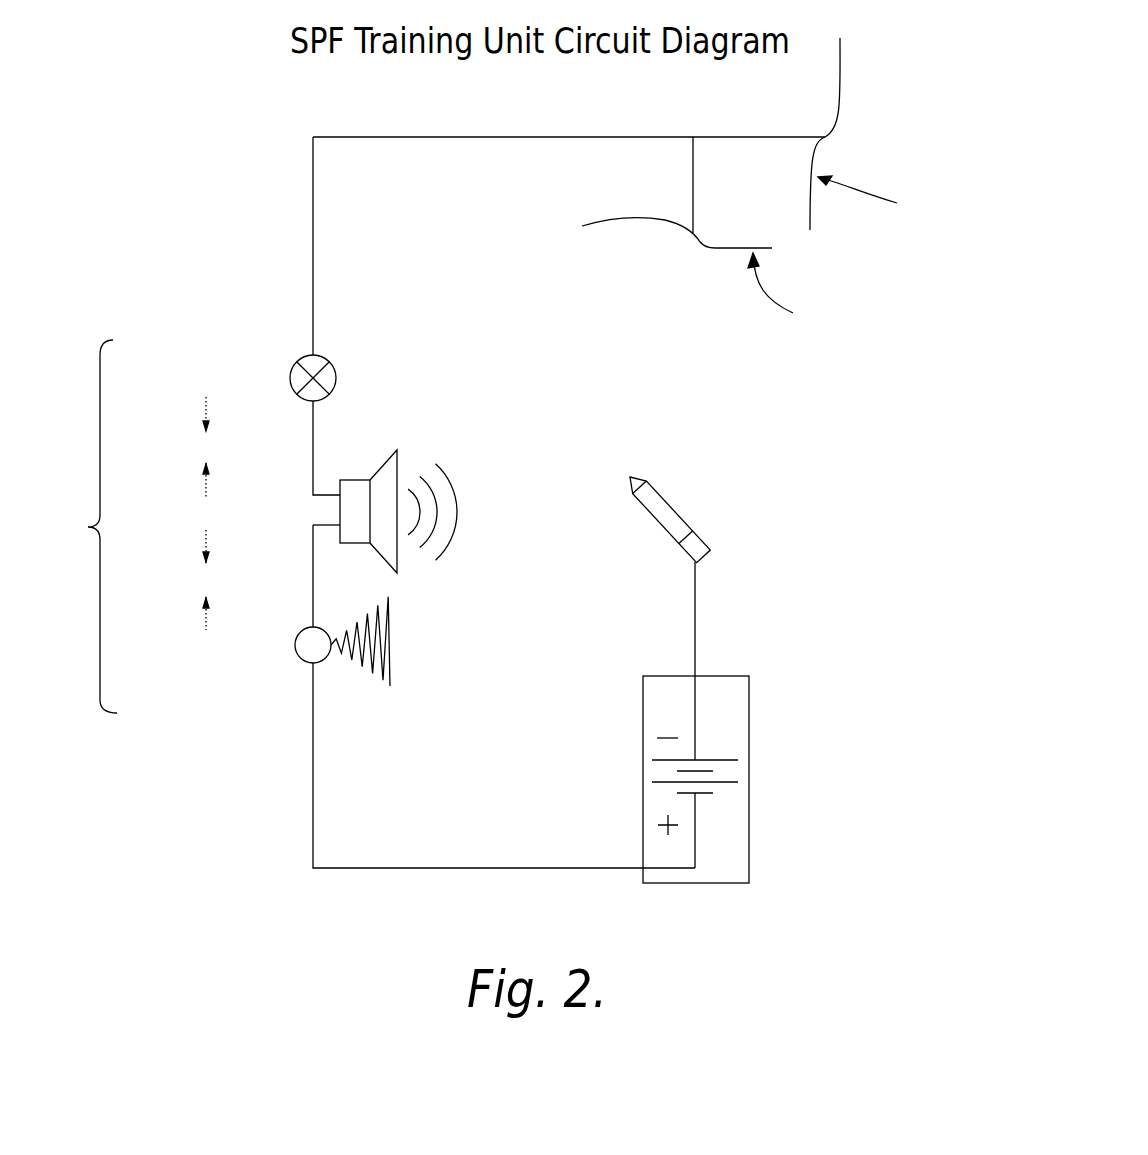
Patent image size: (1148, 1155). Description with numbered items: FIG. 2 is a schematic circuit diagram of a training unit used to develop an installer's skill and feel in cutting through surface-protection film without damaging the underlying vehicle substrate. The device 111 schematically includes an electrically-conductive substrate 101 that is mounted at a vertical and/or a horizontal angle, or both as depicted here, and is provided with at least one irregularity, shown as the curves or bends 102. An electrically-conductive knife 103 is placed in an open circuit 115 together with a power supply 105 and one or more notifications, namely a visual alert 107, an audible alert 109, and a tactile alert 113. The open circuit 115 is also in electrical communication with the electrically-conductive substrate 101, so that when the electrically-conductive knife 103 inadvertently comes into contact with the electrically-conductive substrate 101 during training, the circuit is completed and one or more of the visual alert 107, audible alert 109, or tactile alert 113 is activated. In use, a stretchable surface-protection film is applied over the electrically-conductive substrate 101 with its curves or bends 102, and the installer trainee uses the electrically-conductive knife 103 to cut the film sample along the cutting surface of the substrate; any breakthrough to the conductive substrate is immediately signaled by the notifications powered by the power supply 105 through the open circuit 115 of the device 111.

The electrically-conductive substrate 101 is at (845, 253).
The curves or bends 102 is at (840, 102).
The electrically-conductive knife 103 is at (680, 514).
The power supply 105 is at (749, 851).
The visual alert 107 is at (297, 356).
The audible alert 109 is at (393, 453).
The device 111 is at (163, 526).
The tactile alert 113 is at (307, 660).
The open circuit 115 is at (388, 870).